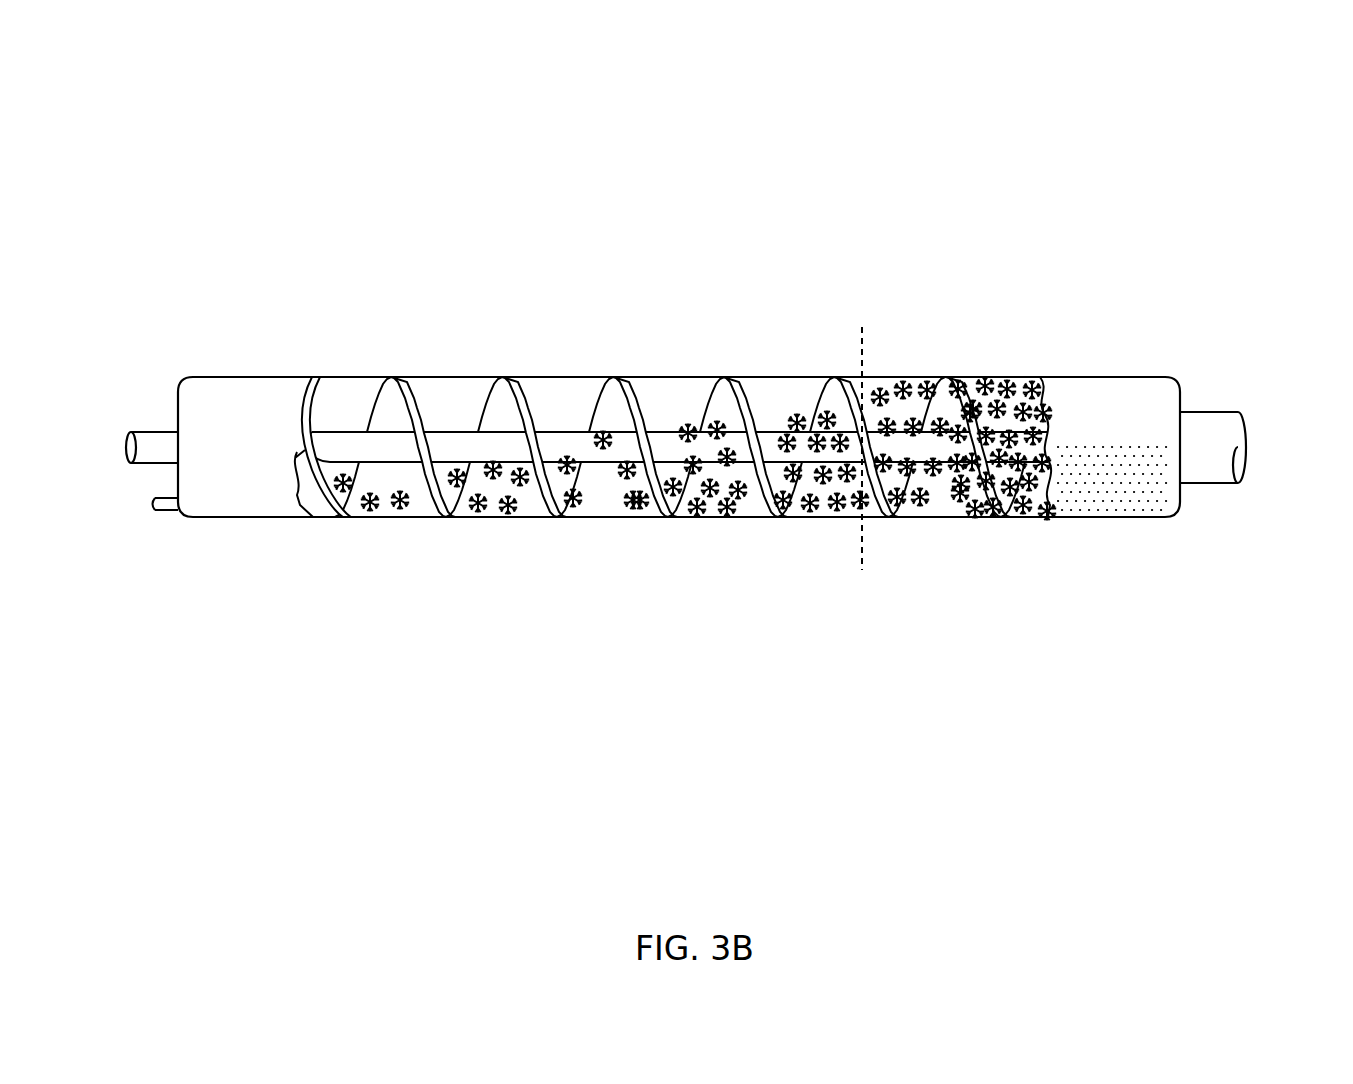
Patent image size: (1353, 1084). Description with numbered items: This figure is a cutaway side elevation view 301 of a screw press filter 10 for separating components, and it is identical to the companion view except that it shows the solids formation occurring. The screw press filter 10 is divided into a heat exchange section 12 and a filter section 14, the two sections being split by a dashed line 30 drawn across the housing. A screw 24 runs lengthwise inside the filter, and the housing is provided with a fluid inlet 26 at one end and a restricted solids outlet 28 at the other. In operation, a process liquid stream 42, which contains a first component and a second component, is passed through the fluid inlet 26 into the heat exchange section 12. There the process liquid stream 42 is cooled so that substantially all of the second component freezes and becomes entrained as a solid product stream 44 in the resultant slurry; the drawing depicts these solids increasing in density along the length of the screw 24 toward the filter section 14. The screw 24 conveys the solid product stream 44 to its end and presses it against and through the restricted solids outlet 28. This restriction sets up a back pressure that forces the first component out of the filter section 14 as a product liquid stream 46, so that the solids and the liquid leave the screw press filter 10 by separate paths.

The cutaway side elevation view 301 is at (180, 88).
The screw press filter 10 is at (183, 392).
The heat exchange section 12 is at (277, 377).
The filter section 14 is at (1075, 490).
The screw 24 is at (420, 517).
The fluid inlet 26 is at (173, 512).
The restricted solids outlet 28 is at (1203, 412).
The dashed line 30 is at (862, 431).
The process liquid stream 42 is at (142, 504).
The solid product stream 44 is at (1250, 448).
The product liquid stream 46 is at (1110, 519).